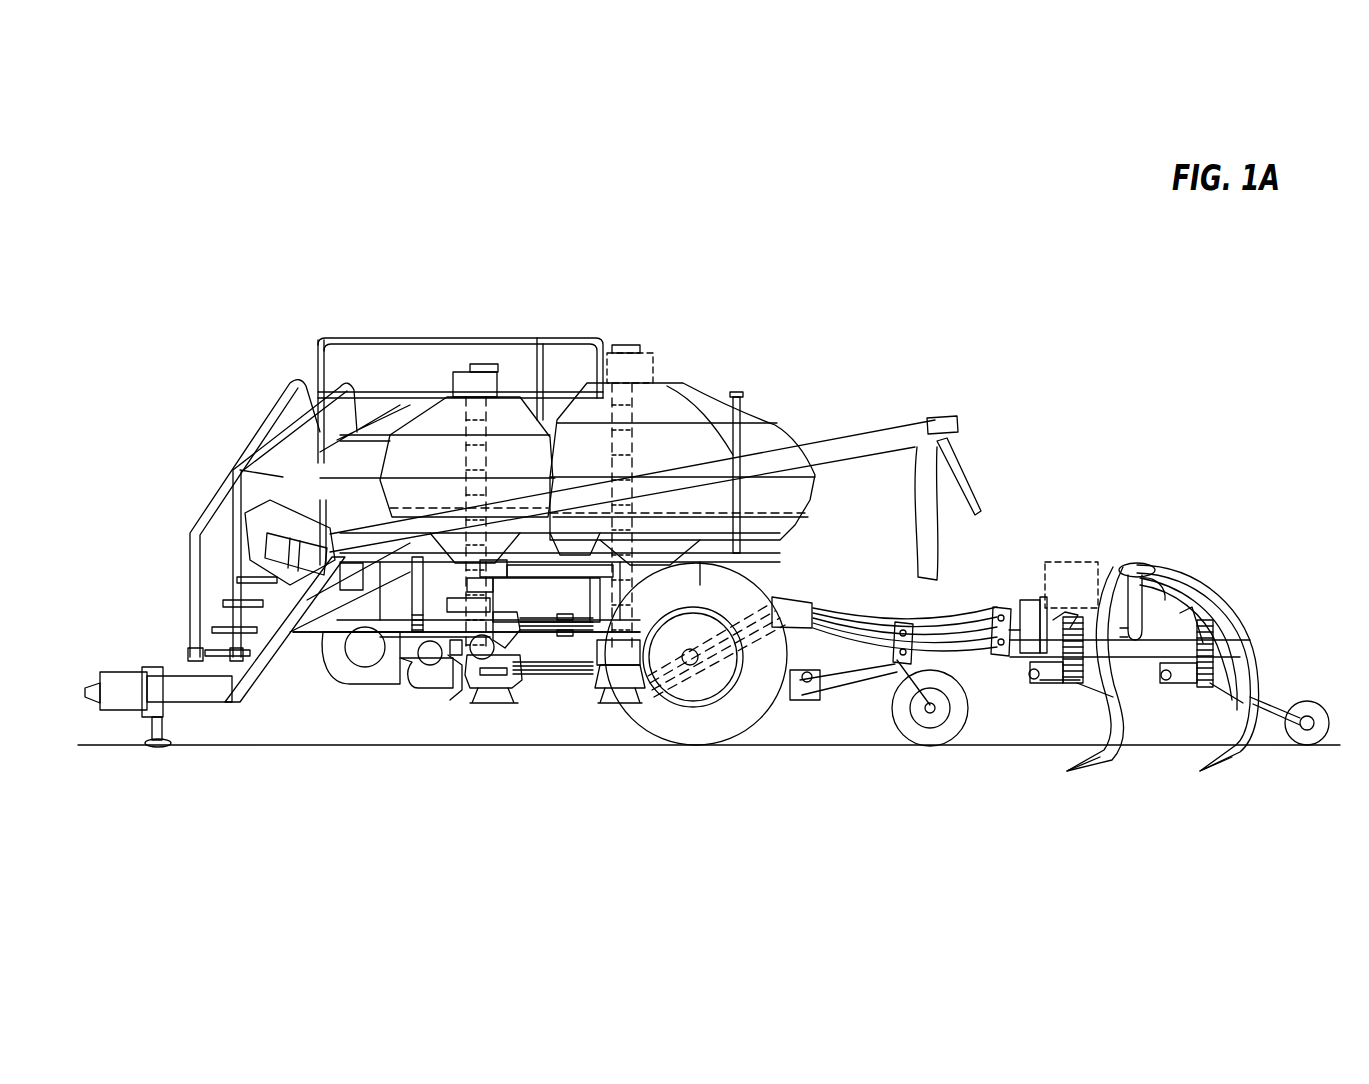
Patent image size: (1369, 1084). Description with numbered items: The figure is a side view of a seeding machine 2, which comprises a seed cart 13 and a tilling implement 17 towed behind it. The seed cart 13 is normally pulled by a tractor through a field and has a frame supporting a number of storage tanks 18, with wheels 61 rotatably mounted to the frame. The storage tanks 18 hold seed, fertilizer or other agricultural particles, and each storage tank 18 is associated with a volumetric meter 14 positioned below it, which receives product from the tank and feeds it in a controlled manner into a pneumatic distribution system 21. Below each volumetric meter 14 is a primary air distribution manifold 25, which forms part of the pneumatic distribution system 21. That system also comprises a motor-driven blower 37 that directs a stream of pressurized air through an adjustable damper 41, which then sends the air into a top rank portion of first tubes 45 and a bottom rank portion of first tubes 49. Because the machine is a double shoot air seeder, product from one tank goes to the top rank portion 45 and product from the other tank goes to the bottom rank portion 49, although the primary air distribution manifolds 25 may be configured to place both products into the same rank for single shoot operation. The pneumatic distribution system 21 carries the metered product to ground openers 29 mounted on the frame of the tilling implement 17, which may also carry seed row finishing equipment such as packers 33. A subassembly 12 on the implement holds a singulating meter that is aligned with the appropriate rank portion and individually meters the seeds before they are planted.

The seeding machine 2 is at (987, 388).
The pneumatic distribution system 21 is at (327, 696).
The tilling implement 17 is at (1190, 503).
The seed cart 13 is at (808, 430).
The storage tanks 18 is at (452, 471).
The subassembly 12 is at (1085, 597).
The volumetric meter 14 is at (595, 655).
The primary air distribution manifold 25 is at (462, 690).
The ground openers 29 is at (1087, 768).
The packers 33 is at (1315, 706).
The blower 37 is at (337, 662).
The adjustable damper 41 is at (407, 682).
The top rank portion of first tubes 45 is at (420, 665).
The bottom rank portion of first tubes 49 is at (457, 692).
The wheels 61 is at (727, 727).